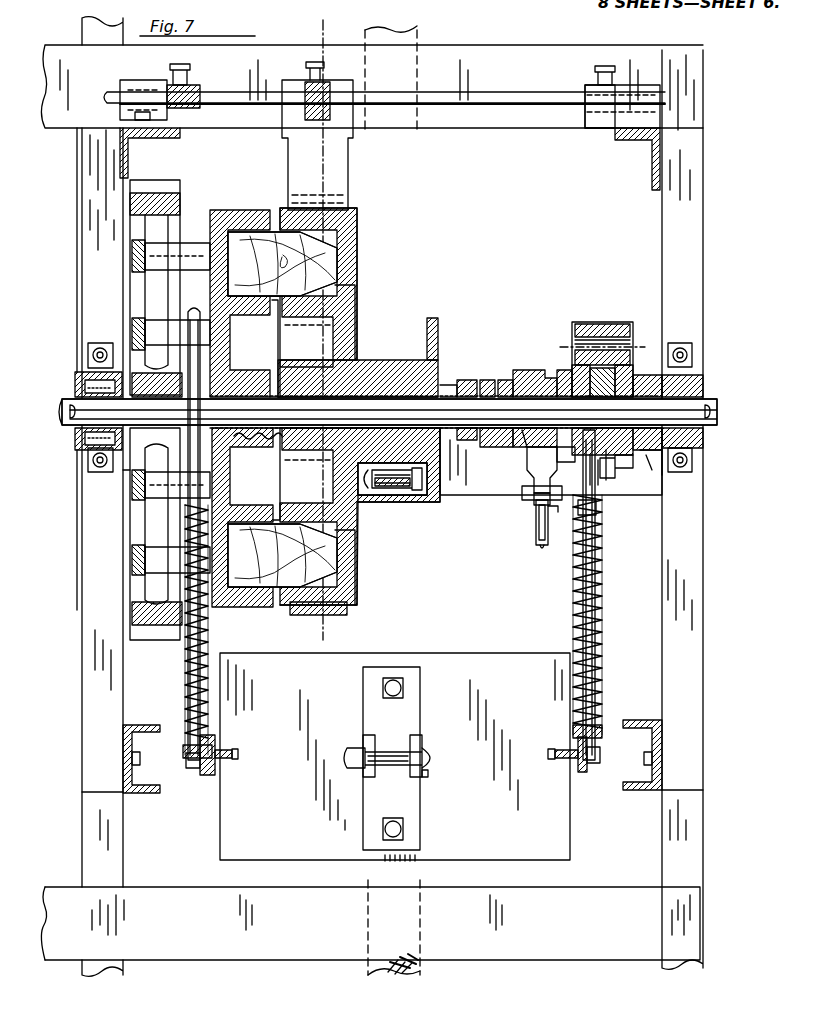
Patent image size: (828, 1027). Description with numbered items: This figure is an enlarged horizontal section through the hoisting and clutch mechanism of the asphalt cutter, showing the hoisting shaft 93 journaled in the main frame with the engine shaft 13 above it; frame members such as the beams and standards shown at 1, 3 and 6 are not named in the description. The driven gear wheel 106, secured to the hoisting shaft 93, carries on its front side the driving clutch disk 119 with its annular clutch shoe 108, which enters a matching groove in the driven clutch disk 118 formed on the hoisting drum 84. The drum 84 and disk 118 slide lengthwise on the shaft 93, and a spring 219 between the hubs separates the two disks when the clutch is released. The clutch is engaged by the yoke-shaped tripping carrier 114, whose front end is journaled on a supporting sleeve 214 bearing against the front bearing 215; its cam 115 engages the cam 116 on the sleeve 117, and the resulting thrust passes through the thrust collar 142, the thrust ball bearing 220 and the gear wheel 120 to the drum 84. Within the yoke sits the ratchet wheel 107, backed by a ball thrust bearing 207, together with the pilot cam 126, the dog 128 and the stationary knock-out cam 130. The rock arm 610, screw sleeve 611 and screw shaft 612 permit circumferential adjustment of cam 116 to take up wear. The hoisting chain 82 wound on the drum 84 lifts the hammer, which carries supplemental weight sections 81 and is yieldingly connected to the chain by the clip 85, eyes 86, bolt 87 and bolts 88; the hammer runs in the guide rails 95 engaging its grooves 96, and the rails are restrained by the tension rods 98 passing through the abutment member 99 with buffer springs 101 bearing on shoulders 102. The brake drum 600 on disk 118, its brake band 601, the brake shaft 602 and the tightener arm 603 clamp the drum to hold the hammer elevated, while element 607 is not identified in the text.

The base frame beam 1 is at (370, 923).
The frame standard 3 is at (80, 603).
The cross bar 6 is at (417, 42).
The engine shaft 13 is at (323, 22).
The supplemental weight sections 81 is at (395, 756).
The hoisting chain 82 is at (415, 495).
The hoisting drum 84 is at (355, 362).
The clip 85 is at (362, 708).
The eyes 86 is at (426, 752).
The bolt 87 is at (388, 752).
The bolts 88 is at (397, 678).
The hoisting shaft 93 is at (717, 410).
The guide rails 95 is at (215, 752).
The grooves 96 is at (240, 754).
The tension rods 98 is at (186, 648).
The intermediate member 99 is at (532, 484).
The buffer spring 101 is at (208, 633).
The shoulder 102 is at (182, 744).
The driven gear wheel 106 is at (160, 184).
The ratchet wheel 107 is at (630, 460).
The annular clutch shoe 108 is at (335, 262).
The tripping carrier 114 is at (630, 324).
The cam 115 is at (573, 356).
The cam 116 is at (548, 374).
The sleeve 117 is at (526, 455).
The clutch disk 118 is at (340, 240).
The clutch disk 119 is at (224, 212).
The gear wheel 120 is at (458, 381).
The pilot cam 126 is at (592, 502).
The dog 128 is at (598, 334).
The knock-out cam 130 is at (655, 480).
The thrust collar 142 is at (520, 500).
The ball thrust bearing 207 is at (568, 462).
The supporting sleeve 214 is at (655, 450).
The front bearing 215 is at (690, 440).
The spring 219 is at (246, 448).
The thrust ball bearing 220 is at (482, 446).
The brake drum 600 is at (345, 596).
The brake band 601 is at (348, 611).
The brake shaft 602 is at (518, 90).
The tightener arm 603 is at (306, 84).
The block 607 is at (604, 130).
The rock arm 610 is at (552, 515).
The screw sleeve 611 is at (536, 526).
The screw shaft 612 is at (548, 513).